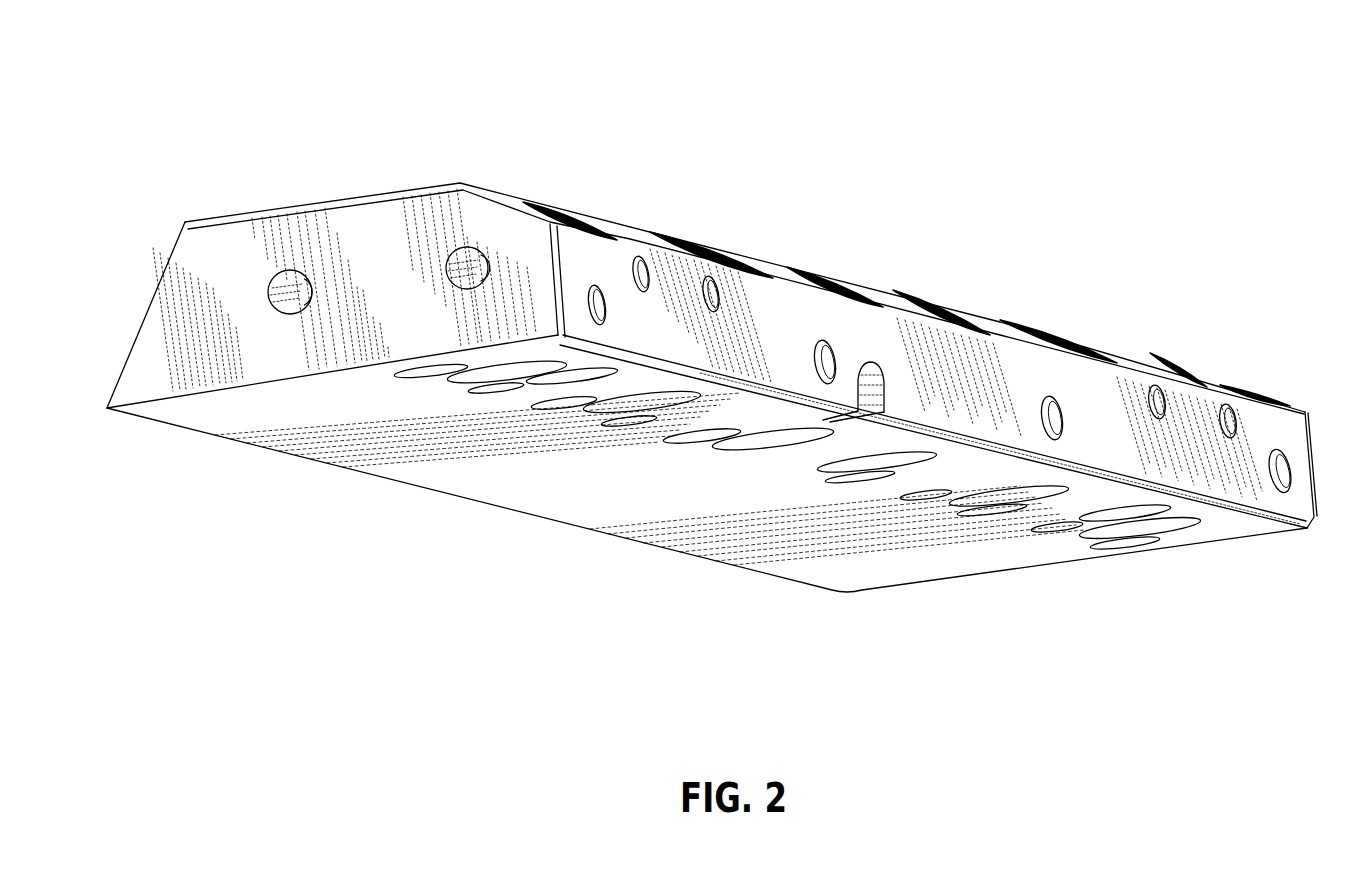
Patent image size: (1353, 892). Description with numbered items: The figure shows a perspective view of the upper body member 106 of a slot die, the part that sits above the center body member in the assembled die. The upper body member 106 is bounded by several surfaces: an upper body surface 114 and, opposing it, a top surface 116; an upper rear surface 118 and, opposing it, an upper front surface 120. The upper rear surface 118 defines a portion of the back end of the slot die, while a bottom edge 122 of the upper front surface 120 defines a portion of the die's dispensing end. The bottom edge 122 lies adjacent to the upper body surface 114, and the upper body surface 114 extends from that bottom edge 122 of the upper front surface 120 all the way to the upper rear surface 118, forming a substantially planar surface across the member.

The upper body member 106 is at (268, 95).
The upper body surface 114 is at (477, 472).
The top surface 116 is at (311, 200).
The upper rear surface 118 is at (680, 277).
The upper front surface 120 is at (138, 311).
The bottom edge 122 is at (229, 445).